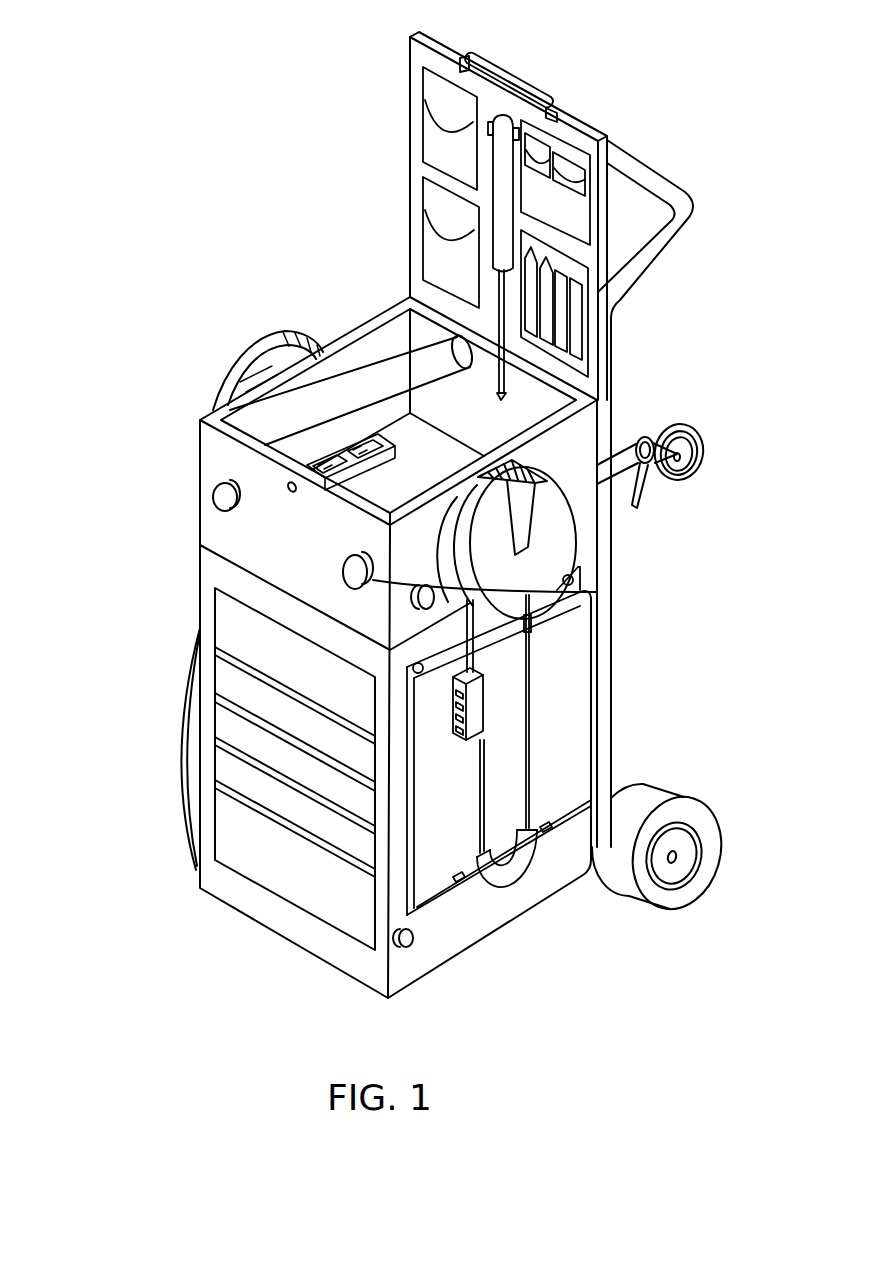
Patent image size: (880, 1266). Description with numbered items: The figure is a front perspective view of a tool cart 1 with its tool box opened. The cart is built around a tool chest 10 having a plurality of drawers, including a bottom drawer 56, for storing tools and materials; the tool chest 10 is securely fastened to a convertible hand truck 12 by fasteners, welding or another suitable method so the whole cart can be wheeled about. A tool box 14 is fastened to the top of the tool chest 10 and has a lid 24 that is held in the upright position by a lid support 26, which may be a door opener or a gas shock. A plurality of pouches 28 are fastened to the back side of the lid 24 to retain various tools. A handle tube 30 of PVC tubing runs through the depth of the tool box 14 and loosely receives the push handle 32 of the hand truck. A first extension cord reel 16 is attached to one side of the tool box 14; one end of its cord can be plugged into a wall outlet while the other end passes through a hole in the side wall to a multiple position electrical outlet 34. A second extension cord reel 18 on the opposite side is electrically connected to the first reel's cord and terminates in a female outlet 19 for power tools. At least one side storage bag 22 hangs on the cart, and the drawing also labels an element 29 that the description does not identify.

The tool cart 1 is at (95, 1012).
The tool chest 10 is at (217, 877).
The convertible hand truck 12 is at (613, 423).
The tool box 14 is at (230, 537).
The first extension cord reel 16 is at (222, 388).
The second extension cord reel 18 is at (540, 552).
The female outlet 19 is at (565, 668).
The side storage bag 22 is at (185, 717).
The lid 24 is at (607, 213).
The lid support 26 is at (550, 93).
The pouches 28 is at (450, 262).
The indicator light 29 is at (292, 485).
The handle tube 30 is at (478, 708).
The push handle 32 is at (665, 254).
The multiple position electrical outlet 34 is at (340, 447).
The bottom drawer 56 is at (233, 837).